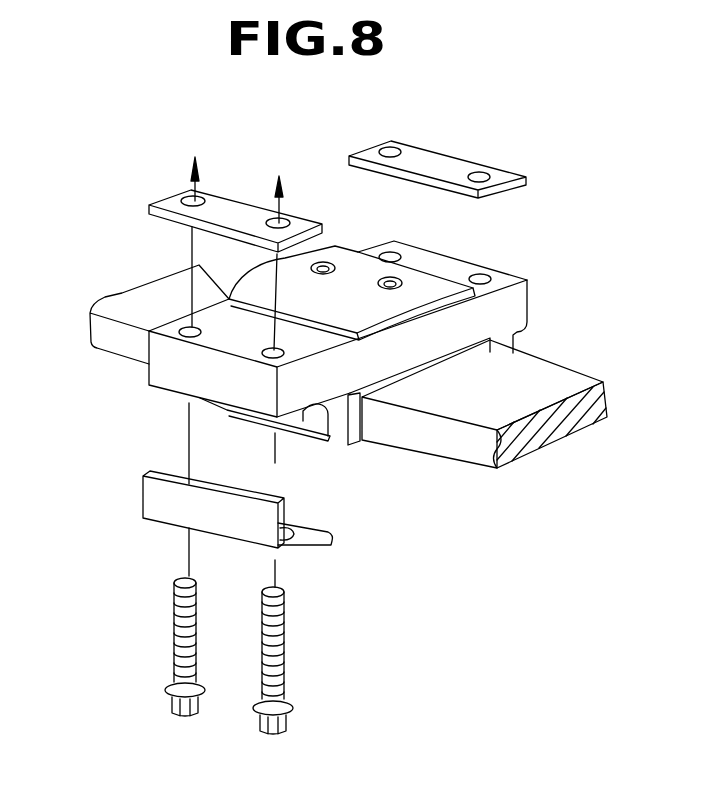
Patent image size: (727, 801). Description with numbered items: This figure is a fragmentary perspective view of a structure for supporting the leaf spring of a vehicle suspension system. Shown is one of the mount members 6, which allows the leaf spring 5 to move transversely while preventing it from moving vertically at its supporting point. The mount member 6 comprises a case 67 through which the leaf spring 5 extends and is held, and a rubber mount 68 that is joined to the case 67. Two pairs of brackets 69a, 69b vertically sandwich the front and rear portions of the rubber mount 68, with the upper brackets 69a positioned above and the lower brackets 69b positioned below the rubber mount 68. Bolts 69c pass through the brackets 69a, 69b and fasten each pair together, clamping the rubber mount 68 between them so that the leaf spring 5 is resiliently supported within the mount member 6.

The leaf spring 5 is at (460, 450).
The mount member 6 is at (548, 257).
The case 67 is at (357, 443).
The rubber mount 68 is at (306, 388).
The bracket 69a is at (177, 197).
The bracket 69b is at (178, 512).
The bolt 69c is at (175, 637).